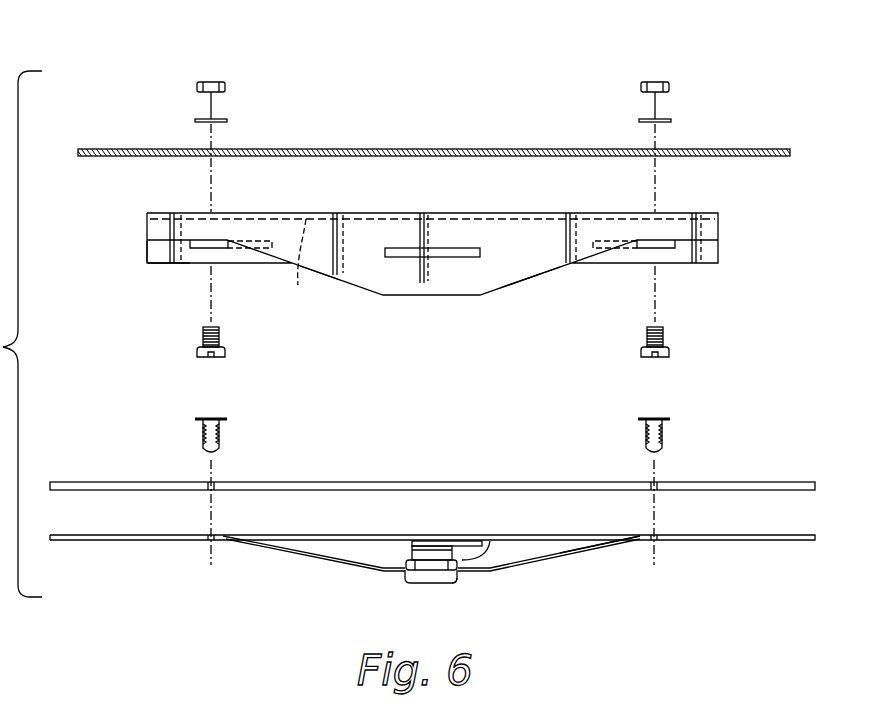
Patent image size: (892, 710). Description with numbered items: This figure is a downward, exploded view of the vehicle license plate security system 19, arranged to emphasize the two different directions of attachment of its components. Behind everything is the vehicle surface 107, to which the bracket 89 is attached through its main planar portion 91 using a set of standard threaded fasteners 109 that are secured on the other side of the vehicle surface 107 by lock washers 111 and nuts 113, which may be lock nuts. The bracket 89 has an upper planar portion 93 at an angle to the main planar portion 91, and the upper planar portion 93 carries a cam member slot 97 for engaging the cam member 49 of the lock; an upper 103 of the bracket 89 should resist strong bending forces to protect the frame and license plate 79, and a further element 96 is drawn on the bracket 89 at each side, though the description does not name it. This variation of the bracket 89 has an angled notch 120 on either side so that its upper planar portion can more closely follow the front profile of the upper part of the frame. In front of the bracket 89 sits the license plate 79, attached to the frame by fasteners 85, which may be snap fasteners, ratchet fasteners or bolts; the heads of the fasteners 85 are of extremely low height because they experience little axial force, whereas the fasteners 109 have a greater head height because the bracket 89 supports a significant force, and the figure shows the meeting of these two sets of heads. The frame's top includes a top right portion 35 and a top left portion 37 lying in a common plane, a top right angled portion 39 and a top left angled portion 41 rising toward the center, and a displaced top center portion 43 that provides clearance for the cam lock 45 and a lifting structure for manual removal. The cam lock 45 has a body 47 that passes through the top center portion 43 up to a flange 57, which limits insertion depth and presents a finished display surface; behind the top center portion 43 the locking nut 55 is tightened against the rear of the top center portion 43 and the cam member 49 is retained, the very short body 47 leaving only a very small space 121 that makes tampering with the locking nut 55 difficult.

The vehicle license plate security system 19 is at (162, 105).
The nut 113 is at (225, 87).
The lock washer 111 is at (227, 121).
The vehicle surface 107 is at (452, 148).
The bracket 89 is at (724, 253).
The upper 103 is at (160, 265).
The tab 96 is at (200, 249).
The main planar portion 91 is at (299, 266).
The upper planar portion 93 is at (349, 285).
The cam member slot 97 is at (448, 258).
The angled notch 120 is at (546, 277).
The threaded fastener 109 is at (225, 352).
The fastener 85 is at (219, 433).
The license plate 79 is at (790, 481).
The top left portion 37 is at (87, 541).
The top right portion 35 is at (766, 541).
The top left angled portion 41 is at (308, 556).
The top center portion 43 is at (392, 572).
The top right angled portion 39 is at (538, 560).
The space 121 is at (552, 551).
The cam member 49 is at (482, 541).
The body 47 is at (510, 542).
The locking nut 55 is at (407, 564).
The cam lock 45 is at (430, 584).
The flange 57 is at (459, 579).